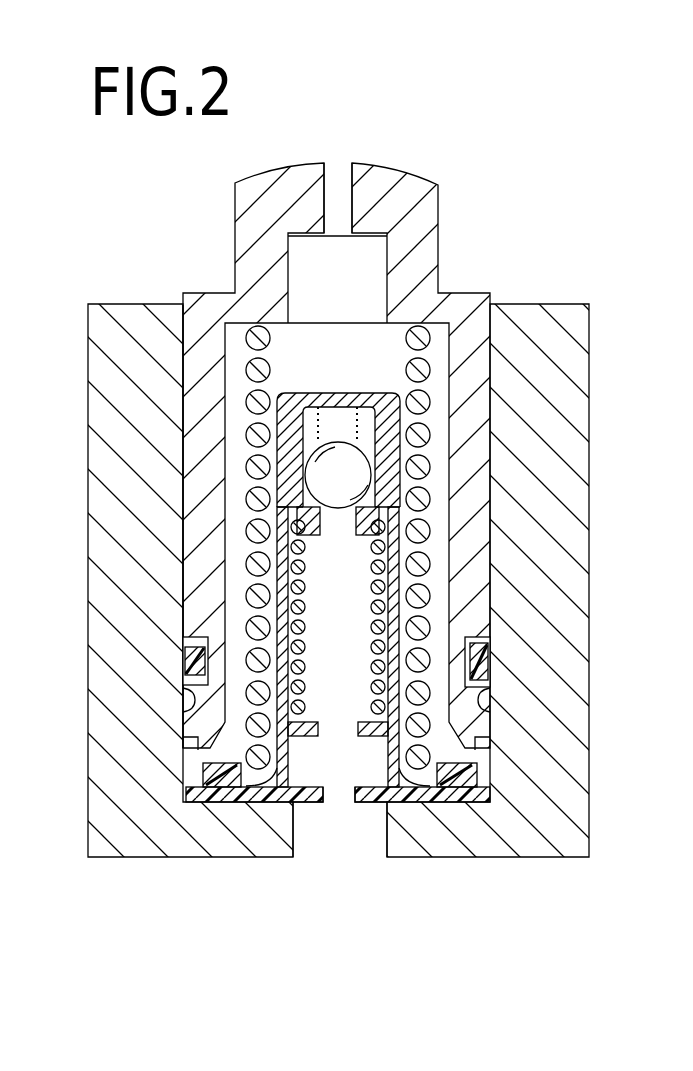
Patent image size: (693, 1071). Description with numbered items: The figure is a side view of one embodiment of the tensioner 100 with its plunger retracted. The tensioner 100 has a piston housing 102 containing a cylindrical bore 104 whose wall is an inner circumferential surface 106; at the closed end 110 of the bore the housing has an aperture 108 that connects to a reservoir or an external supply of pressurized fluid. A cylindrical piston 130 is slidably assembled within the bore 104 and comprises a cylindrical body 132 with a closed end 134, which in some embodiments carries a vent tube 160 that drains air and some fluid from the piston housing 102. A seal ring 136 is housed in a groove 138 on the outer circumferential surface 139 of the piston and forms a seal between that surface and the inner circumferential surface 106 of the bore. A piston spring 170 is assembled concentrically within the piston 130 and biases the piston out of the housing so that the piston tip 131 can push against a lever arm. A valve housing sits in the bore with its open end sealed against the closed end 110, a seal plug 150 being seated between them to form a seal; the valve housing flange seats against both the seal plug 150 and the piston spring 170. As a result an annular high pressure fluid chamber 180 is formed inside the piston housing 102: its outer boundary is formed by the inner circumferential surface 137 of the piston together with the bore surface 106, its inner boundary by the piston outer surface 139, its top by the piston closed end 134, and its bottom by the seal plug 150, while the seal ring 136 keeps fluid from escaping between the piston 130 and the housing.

The tensioner 100 is at (138, 857).
The piston housing 102 is at (556, 829).
The cylindrical bore 104 is at (488, 462).
The inner circumferential surface 106 is at (492, 723).
The aperture 108 is at (362, 828).
The closed end 110 is at (463, 832).
The cylindrical piston 130 is at (410, 213).
The piston tip 131 is at (372, 190).
The cylindrical body 132 is at (482, 599).
The closed end 134 is at (420, 307).
The seal ring 136 is at (183, 649).
The inner circumferential surface 137 is at (492, 706).
The groove 138 is at (197, 705).
The outer circumferential surface 139 is at (180, 533).
The seal plug 150 is at (192, 781).
The vent tube 160 is at (288, 299).
The piston spring 170 is at (415, 633).
The high pressure fluid chamber 180 is at (243, 432).